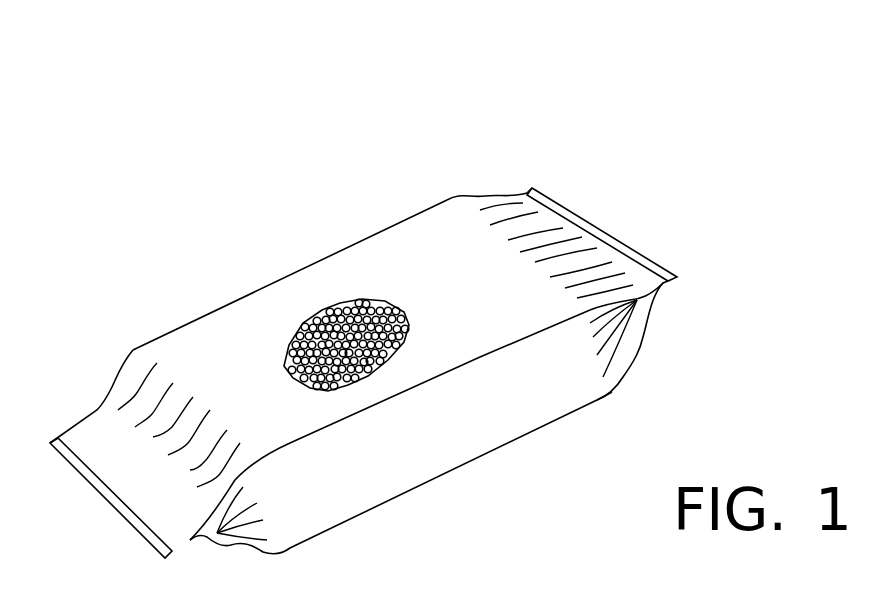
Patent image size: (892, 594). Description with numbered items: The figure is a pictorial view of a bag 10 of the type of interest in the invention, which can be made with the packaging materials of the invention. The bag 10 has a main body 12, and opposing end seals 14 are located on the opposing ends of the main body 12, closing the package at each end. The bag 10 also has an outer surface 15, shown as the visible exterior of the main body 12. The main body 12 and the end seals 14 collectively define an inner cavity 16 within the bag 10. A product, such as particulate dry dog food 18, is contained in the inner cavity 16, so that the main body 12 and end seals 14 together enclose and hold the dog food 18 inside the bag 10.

The bag 10 is at (599, 96).
The main body 12 is at (446, 208).
The end seals 14 is at (618, 248).
The outer surface 15 is at (208, 343).
The inner cavity 16 is at (323, 313).
The particulate dry dog food 18 is at (368, 307).